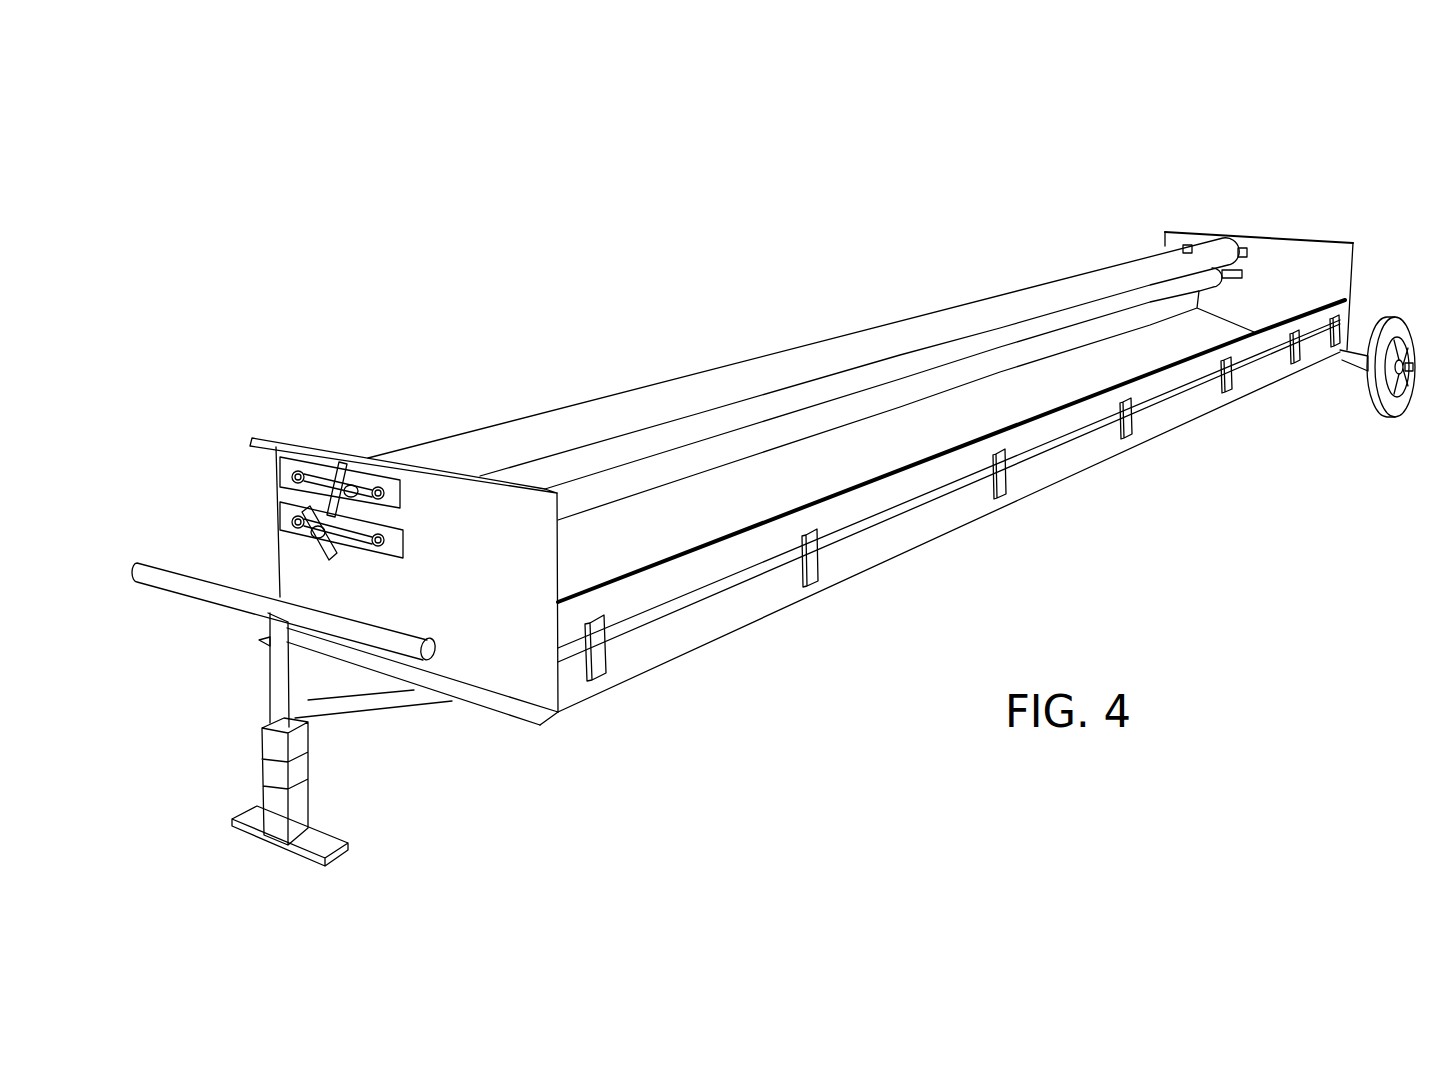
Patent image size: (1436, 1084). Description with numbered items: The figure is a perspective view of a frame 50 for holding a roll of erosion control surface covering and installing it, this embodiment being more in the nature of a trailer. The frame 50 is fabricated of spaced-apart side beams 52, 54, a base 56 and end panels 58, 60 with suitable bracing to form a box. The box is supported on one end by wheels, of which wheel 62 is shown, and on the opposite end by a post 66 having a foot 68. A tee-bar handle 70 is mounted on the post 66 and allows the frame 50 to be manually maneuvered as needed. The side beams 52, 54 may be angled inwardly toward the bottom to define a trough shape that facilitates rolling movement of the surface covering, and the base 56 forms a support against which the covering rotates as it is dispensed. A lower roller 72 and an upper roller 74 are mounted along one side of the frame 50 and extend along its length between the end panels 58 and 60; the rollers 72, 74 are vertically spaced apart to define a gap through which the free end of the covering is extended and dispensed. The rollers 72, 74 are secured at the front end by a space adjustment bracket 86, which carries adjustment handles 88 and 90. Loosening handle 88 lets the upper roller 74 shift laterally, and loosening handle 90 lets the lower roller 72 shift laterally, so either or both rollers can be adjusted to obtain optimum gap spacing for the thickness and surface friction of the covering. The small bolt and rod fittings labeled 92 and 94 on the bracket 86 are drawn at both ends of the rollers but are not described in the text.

The frame 50 is at (692, 228).
The side beam 52 is at (722, 613).
The side beam 54 is at (662, 463).
The base 56 is at (852, 455).
The end panel 58 is at (522, 658).
The end panel 60 is at (1333, 270).
The wheel 62 is at (1373, 406).
The post 66 is at (263, 787).
The foot 68 is at (323, 832).
The tee-bar handle 70 is at (163, 568).
The lower roller 72 is at (862, 372).
The upper roller 74 is at (970, 313).
The space adjustment bracket 86 is at (256, 455).
The adjustment handle 88 is at (343, 463).
The adjustment handle 90 is at (333, 553).
The bolt 92 is at (312, 474).
The adjustment rod 94 is at (353, 528).